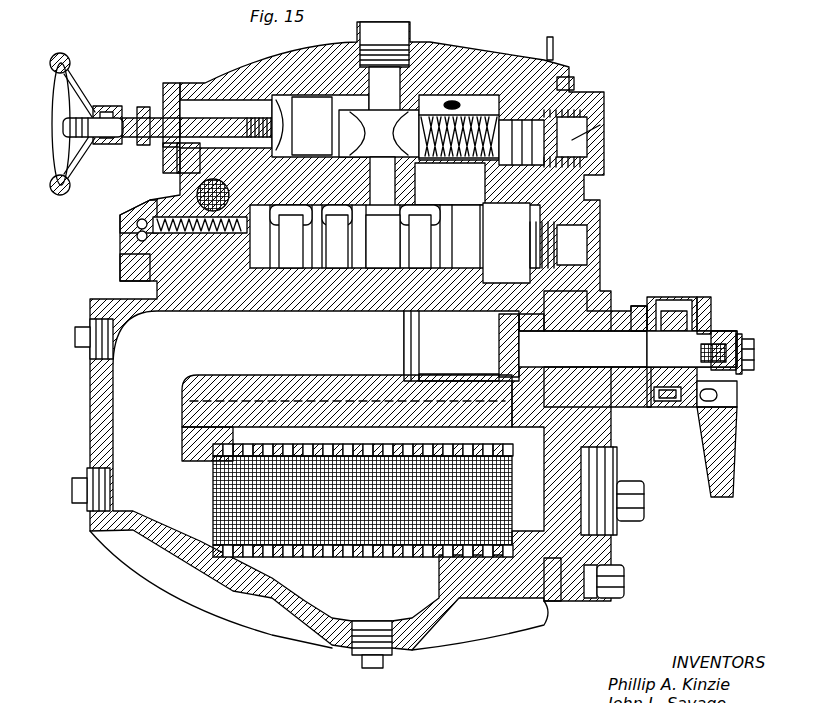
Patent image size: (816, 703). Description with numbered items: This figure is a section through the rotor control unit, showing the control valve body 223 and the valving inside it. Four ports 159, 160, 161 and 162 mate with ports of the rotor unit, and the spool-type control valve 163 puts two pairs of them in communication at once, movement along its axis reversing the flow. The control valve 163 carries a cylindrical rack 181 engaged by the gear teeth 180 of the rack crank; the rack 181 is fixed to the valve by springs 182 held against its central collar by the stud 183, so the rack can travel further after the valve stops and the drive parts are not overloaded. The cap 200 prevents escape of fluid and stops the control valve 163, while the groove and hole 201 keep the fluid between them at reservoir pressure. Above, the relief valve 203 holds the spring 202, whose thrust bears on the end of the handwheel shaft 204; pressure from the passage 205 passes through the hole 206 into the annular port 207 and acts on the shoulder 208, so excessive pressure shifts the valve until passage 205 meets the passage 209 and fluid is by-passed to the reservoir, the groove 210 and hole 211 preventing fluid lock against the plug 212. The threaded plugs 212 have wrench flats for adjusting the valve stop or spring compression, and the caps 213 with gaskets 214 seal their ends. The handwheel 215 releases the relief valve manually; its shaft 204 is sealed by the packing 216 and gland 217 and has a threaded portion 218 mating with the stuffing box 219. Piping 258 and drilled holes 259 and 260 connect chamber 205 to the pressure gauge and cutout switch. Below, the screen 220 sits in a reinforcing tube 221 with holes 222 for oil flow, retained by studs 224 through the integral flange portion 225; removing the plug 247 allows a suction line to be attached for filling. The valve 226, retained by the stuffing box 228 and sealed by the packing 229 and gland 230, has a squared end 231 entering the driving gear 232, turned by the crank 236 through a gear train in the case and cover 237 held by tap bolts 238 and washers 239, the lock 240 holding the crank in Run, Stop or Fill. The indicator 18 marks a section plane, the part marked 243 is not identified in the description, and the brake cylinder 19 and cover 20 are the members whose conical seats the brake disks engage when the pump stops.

The section line 18 is at (468, 19).
The brake cylinder 19 is at (385, 40).
The cover 20 is at (217, 70).
The port 159 is at (280, 268).
The port 160 is at (334, 262).
The port 161 is at (422, 262).
The port 162 is at (595, 212).
The control valve 163 is at (372, 262).
The gear teeth 180 is at (195, 187).
The cylindrical rack 181 is at (178, 190).
The springs 182 is at (128, 262).
The stud 183 is at (117, 230).
The cap 200 is at (123, 208).
The groove and hole 201 is at (137, 276).
The spring 202 is at (464, 166).
The relief valve 203 is at (410, 122).
The handwheel shaft 204 is at (262, 100).
The passage 205 is at (365, 178).
The hole 206 is at (362, 74).
The annular port 207 is at (345, 100).
The shoulder 208 is at (325, 100).
The passage 209 is at (163, 461).
The groove 210 is at (598, 172).
The hole 211 is at (585, 193).
The threaded plug 212 is at (590, 105).
The cap 213 is at (608, 137).
The gasket 214 is at (580, 92).
The handwheel 215 is at (68, 58).
The packing 216 is at (203, 82).
The gland 217 is at (142, 107).
The threaded portion 218 is at (257, 95).
The stuffing box 219 is at (175, 82).
The screen 220 is at (290, 500).
The reinforcing tube 221 is at (405, 551).
The holes 222 is at (424, 454).
The control valve body 223 is at (90, 404).
The studs 224 is at (624, 583).
The integral flange portion 225 is at (577, 598).
The valve 226 is at (499, 341).
The stuffing box 228 is at (594, 294).
The packing 229 is at (587, 307).
The gland 230 is at (641, 304).
The squared end 231 is at (687, 354).
The driving gear 232 is at (674, 312).
The crank 236 is at (726, 434).
The case and cover 237 is at (656, 407).
The tap bolts 238 is at (756, 362).
The washers 239 is at (742, 329).
The lock 240 is at (737, 394).
The stem boss 243 is at (410, 34).
The plug 247 is at (631, 513).
The piping 258 is at (553, 43).
The drilled hole 259 is at (554, 63).
The drilled hole 260 is at (470, 80).